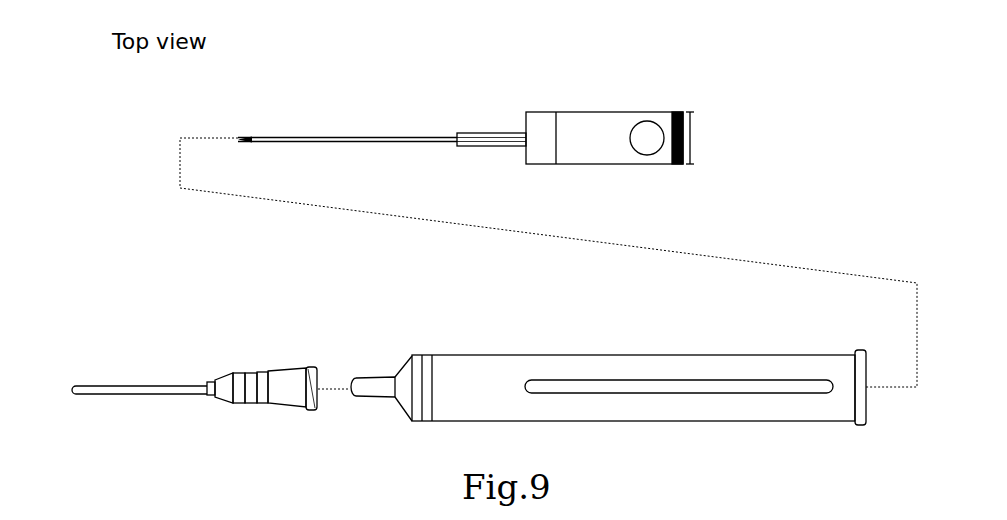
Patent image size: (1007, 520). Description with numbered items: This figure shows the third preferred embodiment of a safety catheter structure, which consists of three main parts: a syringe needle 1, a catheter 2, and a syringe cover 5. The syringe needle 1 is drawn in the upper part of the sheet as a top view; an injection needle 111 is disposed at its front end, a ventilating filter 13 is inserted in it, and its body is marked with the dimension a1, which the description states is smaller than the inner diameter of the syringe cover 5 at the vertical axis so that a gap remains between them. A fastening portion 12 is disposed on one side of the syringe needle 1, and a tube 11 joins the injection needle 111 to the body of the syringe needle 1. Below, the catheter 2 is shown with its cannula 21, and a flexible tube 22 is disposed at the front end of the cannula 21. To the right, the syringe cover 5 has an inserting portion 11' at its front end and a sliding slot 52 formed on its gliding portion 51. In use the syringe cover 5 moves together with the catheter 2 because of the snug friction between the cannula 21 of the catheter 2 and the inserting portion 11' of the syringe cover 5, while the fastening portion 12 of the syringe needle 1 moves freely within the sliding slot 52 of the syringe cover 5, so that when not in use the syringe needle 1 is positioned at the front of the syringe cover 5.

The syringe needle 1 is at (593, 106).
The optical fiber cable 11 is at (476, 101).
The injection needle 111 is at (308, 134).
The fastening portion 12 is at (650, 145).
The ventilating filter 13 is at (677, 112).
The diameter of body of syringe needle a1 is at (701, 138).
The catheter 2 is at (194, 341).
The cannula 21 is at (225, 387).
The flexible tube 22 is at (157, 387).
The inserting portion 11' is at (356, 347).
The syringe cover 5 is at (594, 345).
The gliding portion 51 is at (533, 355).
The sliding slot 52 is at (660, 378).